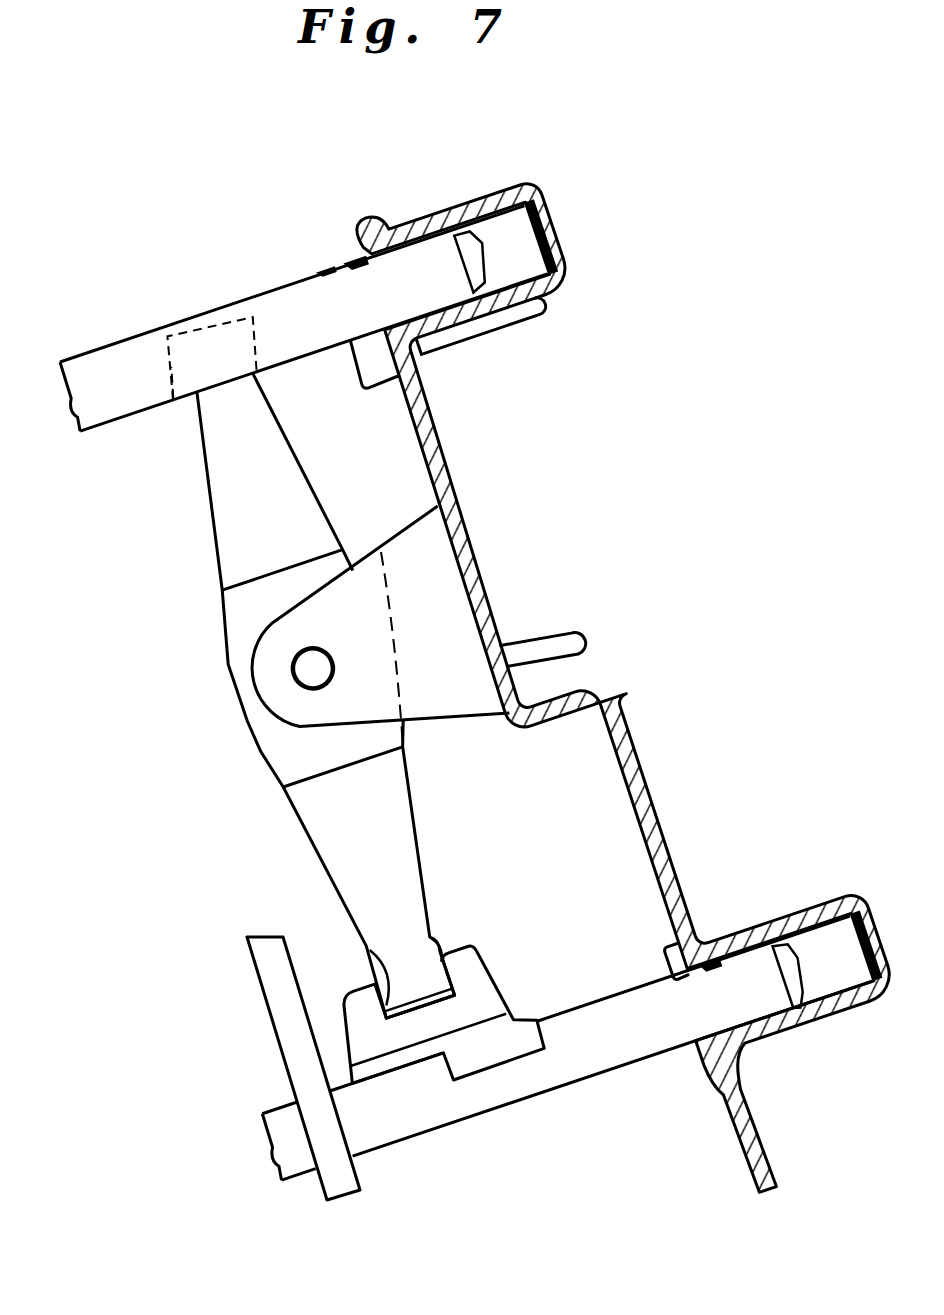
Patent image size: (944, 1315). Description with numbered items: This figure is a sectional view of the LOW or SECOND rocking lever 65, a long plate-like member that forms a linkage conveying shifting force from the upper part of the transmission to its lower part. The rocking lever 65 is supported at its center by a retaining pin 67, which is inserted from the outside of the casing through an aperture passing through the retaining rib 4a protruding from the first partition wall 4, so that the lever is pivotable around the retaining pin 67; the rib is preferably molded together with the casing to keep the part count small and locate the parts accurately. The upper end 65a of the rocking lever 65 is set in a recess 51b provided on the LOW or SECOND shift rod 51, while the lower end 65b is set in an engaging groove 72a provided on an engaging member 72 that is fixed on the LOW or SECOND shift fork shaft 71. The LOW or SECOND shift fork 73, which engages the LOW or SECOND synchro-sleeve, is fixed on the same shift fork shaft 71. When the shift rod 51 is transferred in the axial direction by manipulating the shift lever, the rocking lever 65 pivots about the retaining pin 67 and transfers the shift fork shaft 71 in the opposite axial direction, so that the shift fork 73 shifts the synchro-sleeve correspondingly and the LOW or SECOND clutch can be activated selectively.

The first partition wall 4 is at (427, 405).
The retaining rib 4a is at (382, 550).
The LOW or SECOND shift rod 51 is at (112, 372).
The recess 51b is at (200, 326).
The LOW or SECOND rocking lever 65 is at (247, 610).
The upper end 65a is at (170, 367).
The lower end 65b is at (417, 975).
The retaining pin 67 is at (310, 670).
The LOW or SECOND shift fork shaft 71 is at (600, 1068).
The engaging member 72 is at (480, 992).
The engaging groove 72a is at (365, 952).
The LOW or SECOND shift fork 73 is at (290, 1017).